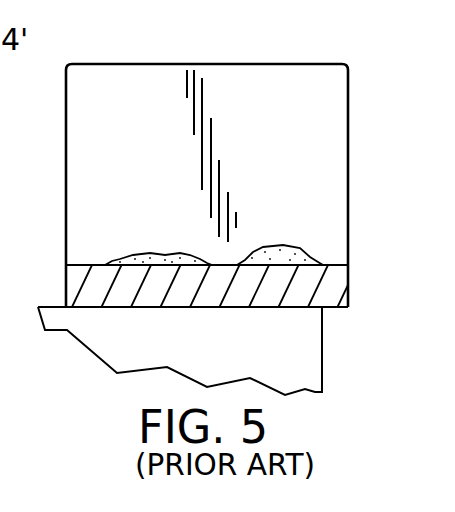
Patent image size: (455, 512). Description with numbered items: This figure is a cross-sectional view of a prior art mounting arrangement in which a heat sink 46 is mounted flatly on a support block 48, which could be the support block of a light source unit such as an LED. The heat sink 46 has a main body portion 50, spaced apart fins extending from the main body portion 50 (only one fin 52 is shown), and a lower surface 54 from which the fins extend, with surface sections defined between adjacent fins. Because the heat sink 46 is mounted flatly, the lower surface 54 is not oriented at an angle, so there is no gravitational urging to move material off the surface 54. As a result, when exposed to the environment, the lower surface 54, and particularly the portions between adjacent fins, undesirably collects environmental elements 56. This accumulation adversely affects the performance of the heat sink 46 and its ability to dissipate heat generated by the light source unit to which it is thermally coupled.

The heat sink 46 is at (349, 132).
The support block 48 is at (110, 348).
The main body portion 50 is at (98, 293).
The fin 52 is at (242, 78).
The lower surface 54 is at (332, 267).
The environmental elements 56 is at (263, 253).